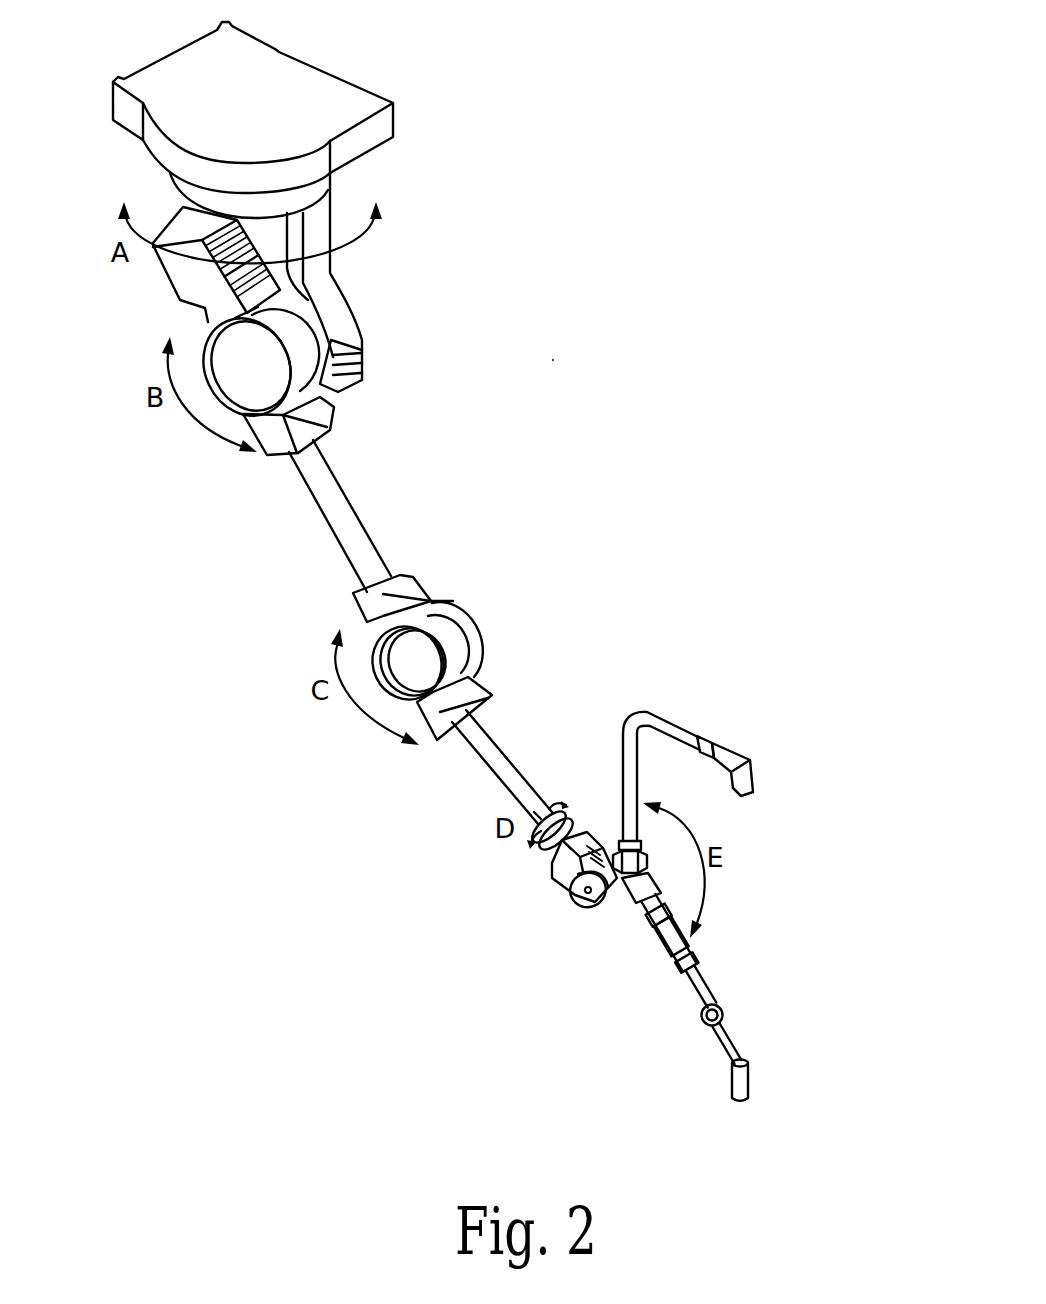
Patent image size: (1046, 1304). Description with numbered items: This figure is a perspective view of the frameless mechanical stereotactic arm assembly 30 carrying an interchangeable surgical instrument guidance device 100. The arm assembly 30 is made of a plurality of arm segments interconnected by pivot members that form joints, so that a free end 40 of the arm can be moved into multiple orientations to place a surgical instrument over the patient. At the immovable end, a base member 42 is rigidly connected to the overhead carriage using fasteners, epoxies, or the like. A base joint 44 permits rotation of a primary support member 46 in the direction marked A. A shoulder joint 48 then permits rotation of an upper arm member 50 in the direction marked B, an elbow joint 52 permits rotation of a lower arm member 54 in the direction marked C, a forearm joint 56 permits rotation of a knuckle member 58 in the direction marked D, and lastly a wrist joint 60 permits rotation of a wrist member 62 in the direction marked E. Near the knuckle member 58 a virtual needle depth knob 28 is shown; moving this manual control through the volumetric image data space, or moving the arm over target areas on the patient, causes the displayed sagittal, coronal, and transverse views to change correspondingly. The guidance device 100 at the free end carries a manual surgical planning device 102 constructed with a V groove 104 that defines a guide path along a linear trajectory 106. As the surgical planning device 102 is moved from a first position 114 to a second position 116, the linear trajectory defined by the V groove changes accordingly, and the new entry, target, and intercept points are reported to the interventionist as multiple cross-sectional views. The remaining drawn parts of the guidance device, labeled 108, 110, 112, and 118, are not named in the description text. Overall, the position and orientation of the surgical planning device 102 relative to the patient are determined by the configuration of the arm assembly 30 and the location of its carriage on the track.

The virtual needle depth knob 28 is at (586, 892).
The frameless stereotactic arm assembly 30 is at (604, 383).
The free end 40 is at (508, 936).
The base member 42 is at (303, 107).
The base joint 44 is at (357, 187).
The primary support member 46 is at (324, 297).
The shoulder joint 48 is at (374, 309).
The upper arm member 50 is at (338, 505).
The elbow joint 52 is at (491, 603).
The lower arm member 54 is at (494, 721).
The forearm joint 56 is at (582, 803).
The knuckle member 58 is at (563, 870).
The wrist joint 60 is at (520, 883).
The wrist member 62 is at (620, 899).
The surgical instrument guidance device 100 is at (806, 824).
The surgical planning device 102 is at (759, 859).
The V groove 104 is at (697, 708).
The linear trajectory 106 is at (629, 975).
The end fitting 108 is at (782, 761).
The tip rod 110 is at (709, 1096).
The tip cylinder 112 is at (774, 1063).
The first position 114 is at (726, 962).
The second position 116 is at (648, 863).
The connector 118 is at (703, 903).